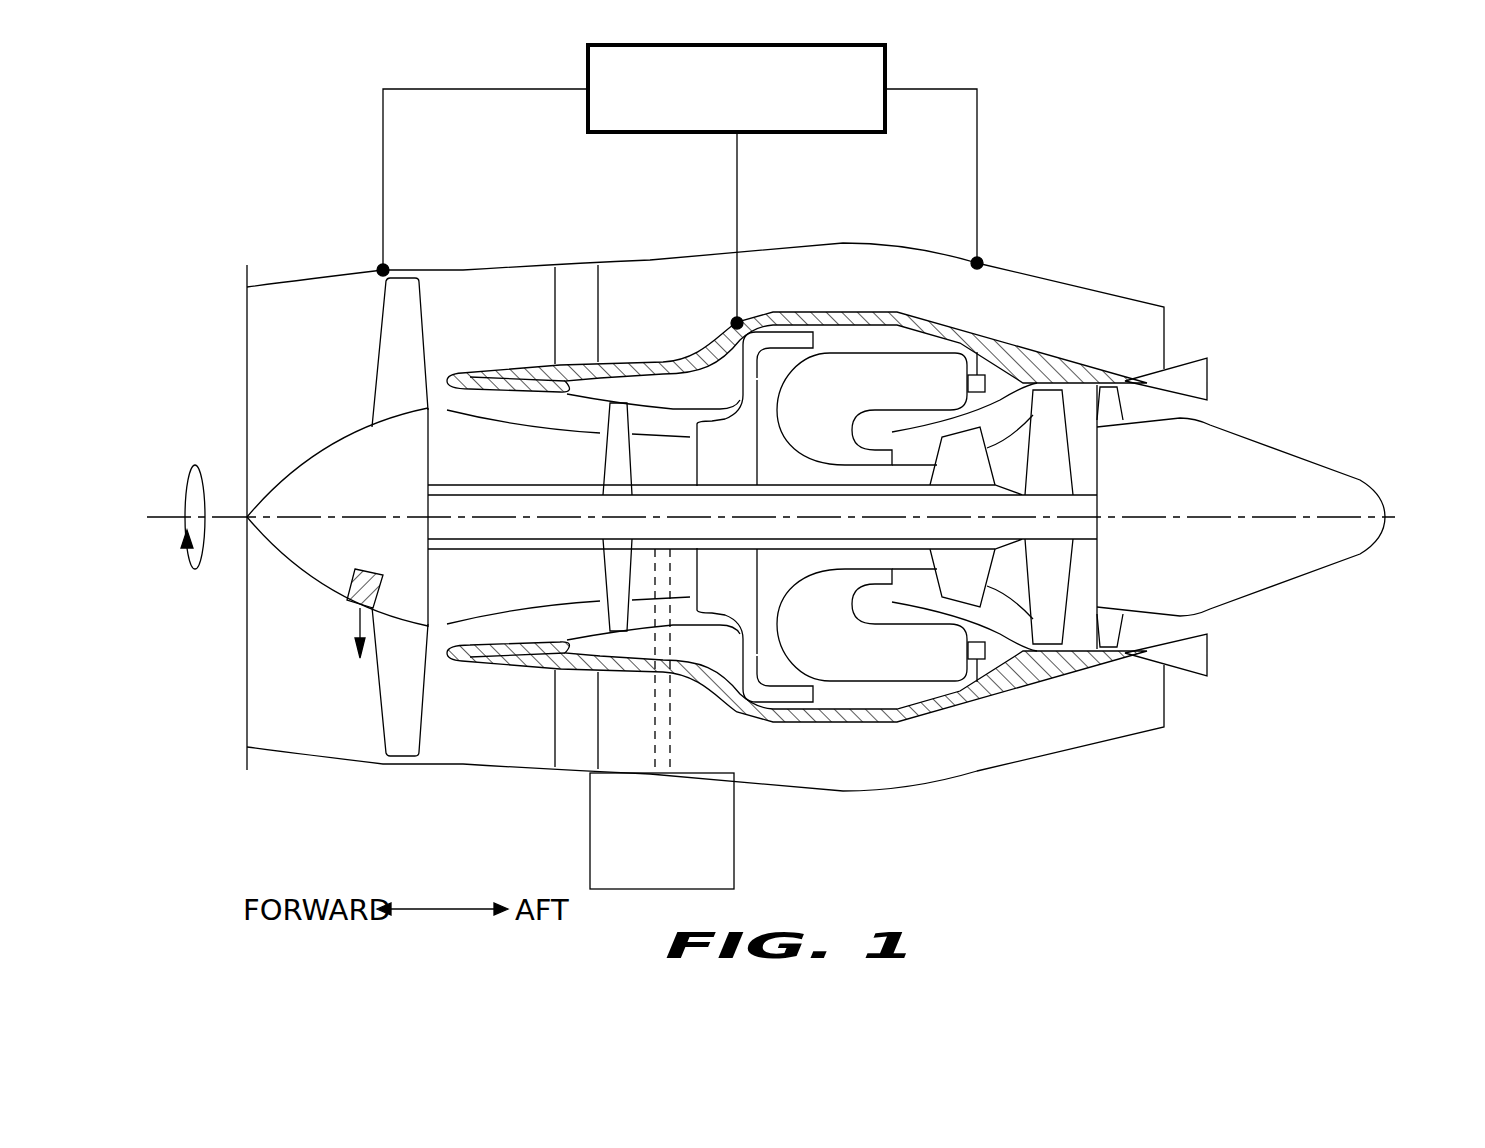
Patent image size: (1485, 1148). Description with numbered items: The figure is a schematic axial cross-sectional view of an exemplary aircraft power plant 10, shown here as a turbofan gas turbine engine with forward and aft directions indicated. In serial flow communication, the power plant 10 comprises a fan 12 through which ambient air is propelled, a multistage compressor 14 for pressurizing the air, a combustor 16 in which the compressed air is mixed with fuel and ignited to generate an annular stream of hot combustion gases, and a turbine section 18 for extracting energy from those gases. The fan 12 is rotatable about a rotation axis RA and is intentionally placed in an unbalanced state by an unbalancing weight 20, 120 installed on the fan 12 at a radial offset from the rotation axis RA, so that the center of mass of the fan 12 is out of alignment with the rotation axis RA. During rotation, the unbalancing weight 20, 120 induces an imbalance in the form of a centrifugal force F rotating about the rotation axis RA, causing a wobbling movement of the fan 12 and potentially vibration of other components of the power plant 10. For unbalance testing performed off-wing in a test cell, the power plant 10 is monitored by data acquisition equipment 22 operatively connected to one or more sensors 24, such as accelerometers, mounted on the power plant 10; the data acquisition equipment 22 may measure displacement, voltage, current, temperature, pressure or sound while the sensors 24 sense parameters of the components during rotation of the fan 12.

The power plant 10 is at (1045, 180).
The fan 12 is at (402, 702).
The multistage compressor 14 is at (652, 417).
The combustor 16 is at (873, 373).
The turbine section 18 is at (1008, 583).
The unbalancing weight 20 is at (255, 598).
The unbalancing weight 120 is at (353, 583).
The data acquisition equipment 22 is at (588, 110).
The sensors 24 is at (383, 270).
The rotation axis RA is at (160, 517).
The centrifugal force F is at (357, 623).